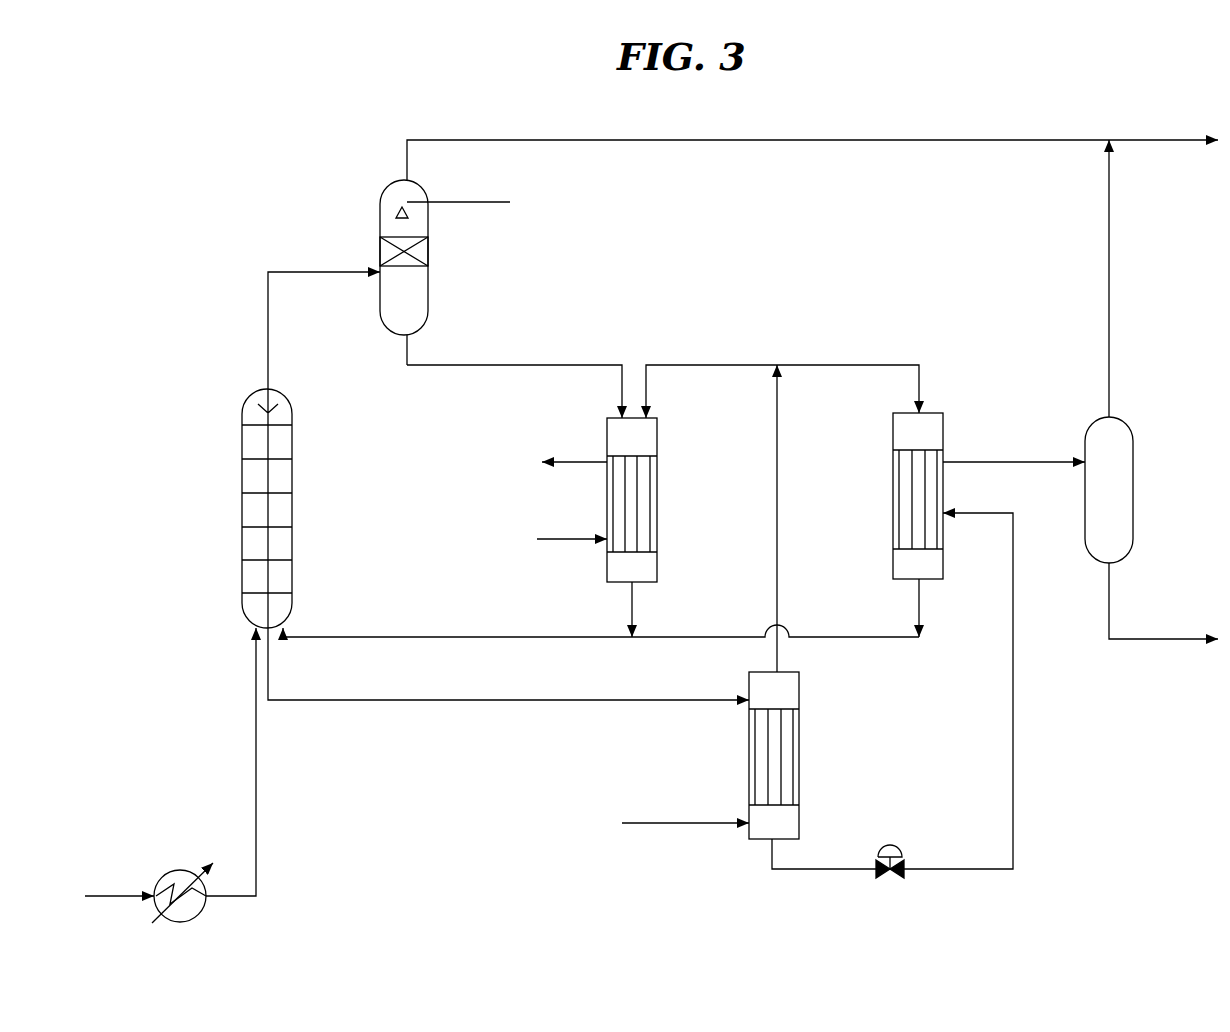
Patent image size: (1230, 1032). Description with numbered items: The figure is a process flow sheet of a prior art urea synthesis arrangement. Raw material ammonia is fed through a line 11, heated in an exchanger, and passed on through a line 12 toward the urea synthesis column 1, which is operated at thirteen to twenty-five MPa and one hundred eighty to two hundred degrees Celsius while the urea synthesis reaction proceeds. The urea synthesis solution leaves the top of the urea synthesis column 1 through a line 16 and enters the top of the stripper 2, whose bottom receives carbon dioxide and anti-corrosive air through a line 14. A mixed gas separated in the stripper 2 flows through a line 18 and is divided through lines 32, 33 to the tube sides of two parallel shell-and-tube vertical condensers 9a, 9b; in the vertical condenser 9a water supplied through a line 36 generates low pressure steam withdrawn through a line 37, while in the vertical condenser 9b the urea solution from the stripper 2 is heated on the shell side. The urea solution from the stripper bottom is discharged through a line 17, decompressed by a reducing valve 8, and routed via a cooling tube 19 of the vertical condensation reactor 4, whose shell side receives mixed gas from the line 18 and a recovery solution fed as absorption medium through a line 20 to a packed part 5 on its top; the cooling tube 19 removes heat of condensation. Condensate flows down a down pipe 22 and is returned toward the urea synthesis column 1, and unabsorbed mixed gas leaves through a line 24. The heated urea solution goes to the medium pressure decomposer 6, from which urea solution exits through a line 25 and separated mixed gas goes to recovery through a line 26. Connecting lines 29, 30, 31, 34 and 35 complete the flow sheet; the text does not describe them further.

The urea synthesis column 1 is at (292, 425).
The stripper 2 is at (799, 683).
The vertical condensation reactor 4 is at (428, 303).
The packed part 5 is at (428, 256).
The medium pressure decomposer 6 is at (1133, 450).
The reducing valve 8 is at (890, 880).
The vertical condenser 9a is at (657, 432).
The vertical condenser 9b is at (943, 432).
The line 11 is at (115, 898).
The line 12 is at (256, 830).
The line 14 is at (680, 826).
The line 16 is at (432, 703).
The line 17 is at (796, 872).
The line 18 is at (777, 505).
The cooling tube 19 is at (970, 872).
The line 20 is at (510, 202).
The down pipe 22 is at (870, 640).
The line 24 is at (462, 142).
The line 25 is at (1109, 595).
The line 26 is at (1109, 287).
The column overhead line 29 is at (268, 330).
The reflux line 30 is at (510, 642).
The liquid line 31 is at (483, 367).
The line 32 is at (718, 367).
The line 33 is at (840, 367).
The outlet line 34 is at (632, 602).
The outlet line 35 is at (1015, 466).
The line 36 is at (576, 542).
The line 37 is at (588, 466).